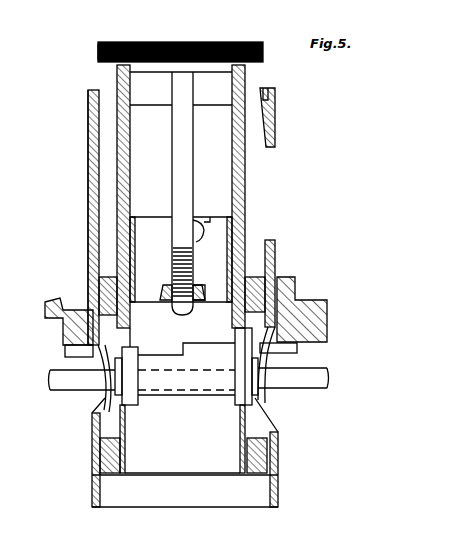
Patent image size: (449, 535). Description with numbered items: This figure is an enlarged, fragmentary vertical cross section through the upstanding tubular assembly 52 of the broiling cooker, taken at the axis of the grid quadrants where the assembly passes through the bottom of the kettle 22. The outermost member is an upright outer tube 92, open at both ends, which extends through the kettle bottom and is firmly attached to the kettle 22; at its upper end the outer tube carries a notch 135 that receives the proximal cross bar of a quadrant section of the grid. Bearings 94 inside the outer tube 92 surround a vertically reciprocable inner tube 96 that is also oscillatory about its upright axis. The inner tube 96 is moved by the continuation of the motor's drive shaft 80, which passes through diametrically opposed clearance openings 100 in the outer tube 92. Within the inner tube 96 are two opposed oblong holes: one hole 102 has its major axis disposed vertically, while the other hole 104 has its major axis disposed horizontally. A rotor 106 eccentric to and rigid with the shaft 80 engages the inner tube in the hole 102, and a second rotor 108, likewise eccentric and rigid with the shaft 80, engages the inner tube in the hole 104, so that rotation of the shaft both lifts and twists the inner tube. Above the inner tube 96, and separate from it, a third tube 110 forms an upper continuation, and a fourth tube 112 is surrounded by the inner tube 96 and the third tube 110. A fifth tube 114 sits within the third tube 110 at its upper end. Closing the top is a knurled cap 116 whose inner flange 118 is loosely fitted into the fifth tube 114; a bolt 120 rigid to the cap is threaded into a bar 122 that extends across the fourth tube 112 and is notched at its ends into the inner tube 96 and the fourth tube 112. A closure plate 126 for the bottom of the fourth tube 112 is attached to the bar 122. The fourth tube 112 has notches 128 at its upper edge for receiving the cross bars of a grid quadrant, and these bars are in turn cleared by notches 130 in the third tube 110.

The kettle 22 is at (328, 300).
The tubular assembly 52 is at (84, 182).
The drive shaft 80 is at (58, 370).
The outer tube 92 is at (88, 138).
The bearings 94 is at (296, 277).
The inner tube 96 is at (152, 467).
The clearance openings 100 is at (100, 396).
The oblong hole 102 is at (130, 350).
The oblong hole 104 is at (247, 420).
The rotor 106 is at (140, 402).
The rotor 108 is at (237, 398).
The third tube 110 is at (247, 172).
The fourth tube 112 is at (145, 218).
The fifth tube 114 is at (228, 87).
The knurled cap 116 is at (100, 42).
The inner flange 118 is at (214, 58).
The bolt 120 is at (171, 133).
The bar 122 is at (164, 288).
The closure plate 126 is at (205, 303).
The notches 128 is at (198, 222).
The notches 130 is at (203, 283).
The notch 135 is at (277, 96).